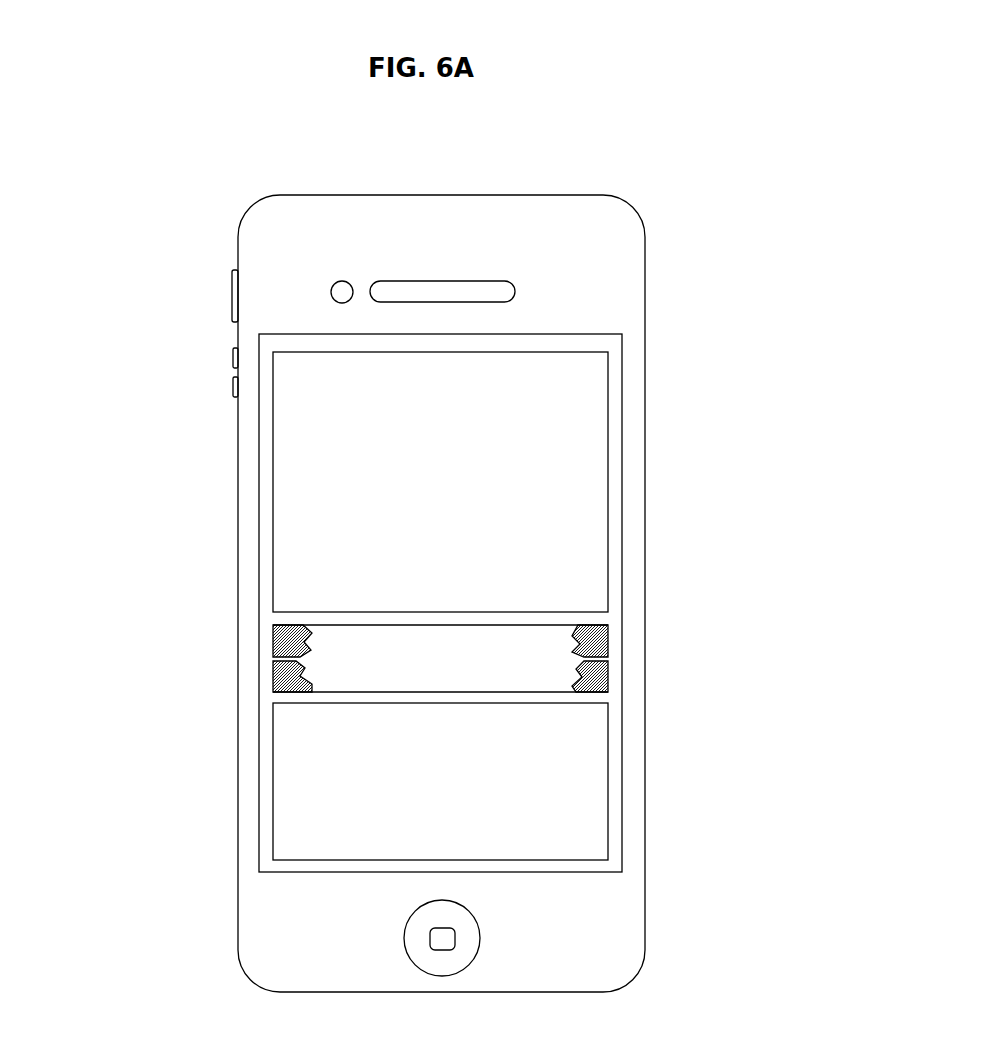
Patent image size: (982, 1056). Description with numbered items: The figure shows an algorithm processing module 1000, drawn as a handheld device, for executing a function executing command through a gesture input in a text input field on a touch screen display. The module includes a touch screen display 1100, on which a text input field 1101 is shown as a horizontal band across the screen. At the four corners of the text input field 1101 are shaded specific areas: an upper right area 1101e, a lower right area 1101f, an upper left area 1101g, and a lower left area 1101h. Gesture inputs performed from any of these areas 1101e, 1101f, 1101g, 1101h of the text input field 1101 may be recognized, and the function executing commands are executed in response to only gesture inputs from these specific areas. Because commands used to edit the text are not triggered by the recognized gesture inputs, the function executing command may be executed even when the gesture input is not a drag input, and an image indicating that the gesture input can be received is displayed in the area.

The algorithm processing module 1000 is at (645, 330).
The touch screen display 1100 is at (622, 398).
The text input field 1101 is at (273, 630).
The upper right area 1101e is at (608, 631).
The lower right area 1101f is at (608, 677).
The upper left area 1101g is at (273, 648).
The lower left area 1101h is at (273, 690).